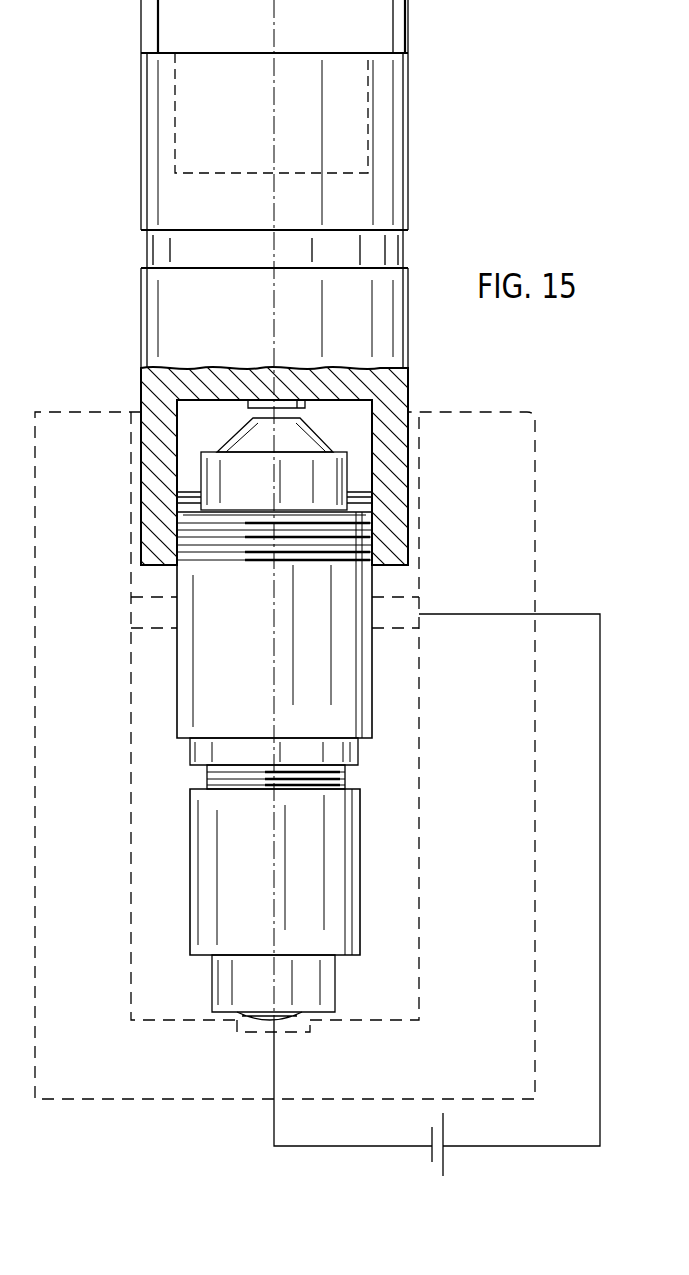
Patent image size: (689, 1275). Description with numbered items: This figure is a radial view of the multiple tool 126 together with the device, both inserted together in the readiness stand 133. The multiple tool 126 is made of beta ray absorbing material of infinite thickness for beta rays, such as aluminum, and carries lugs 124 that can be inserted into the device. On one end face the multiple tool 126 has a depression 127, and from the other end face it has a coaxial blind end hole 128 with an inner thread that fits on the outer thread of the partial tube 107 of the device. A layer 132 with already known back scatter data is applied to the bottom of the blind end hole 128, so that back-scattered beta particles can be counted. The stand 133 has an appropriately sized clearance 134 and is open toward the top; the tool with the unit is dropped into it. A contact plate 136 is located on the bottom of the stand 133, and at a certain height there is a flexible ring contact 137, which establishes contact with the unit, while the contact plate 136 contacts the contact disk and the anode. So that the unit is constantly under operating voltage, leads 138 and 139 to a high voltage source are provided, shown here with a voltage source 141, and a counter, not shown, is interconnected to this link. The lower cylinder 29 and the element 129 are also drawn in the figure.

The lugs 124 is at (148, 12).
The multiple tool 126 is at (408, 152).
The depression 127 is at (237, 88).
The coaxial blind end hole 128 is at (352, 435).
The conical member 129 is at (370, 500).
The layer 132 is at (258, 400).
The partial tube 107 is at (185, 537).
The lower cylinder 29 is at (274, 874).
The contact plate 136 is at (265, 1032).
The stand 133 is at (487, 746).
The flexible ring contact 137 is at (403, 612).
The clearance 134 is at (131, 766).
The lead 139 is at (600, 742).
The lead 138 is at (274, 1068).
The battery 141 is at (445, 1140).